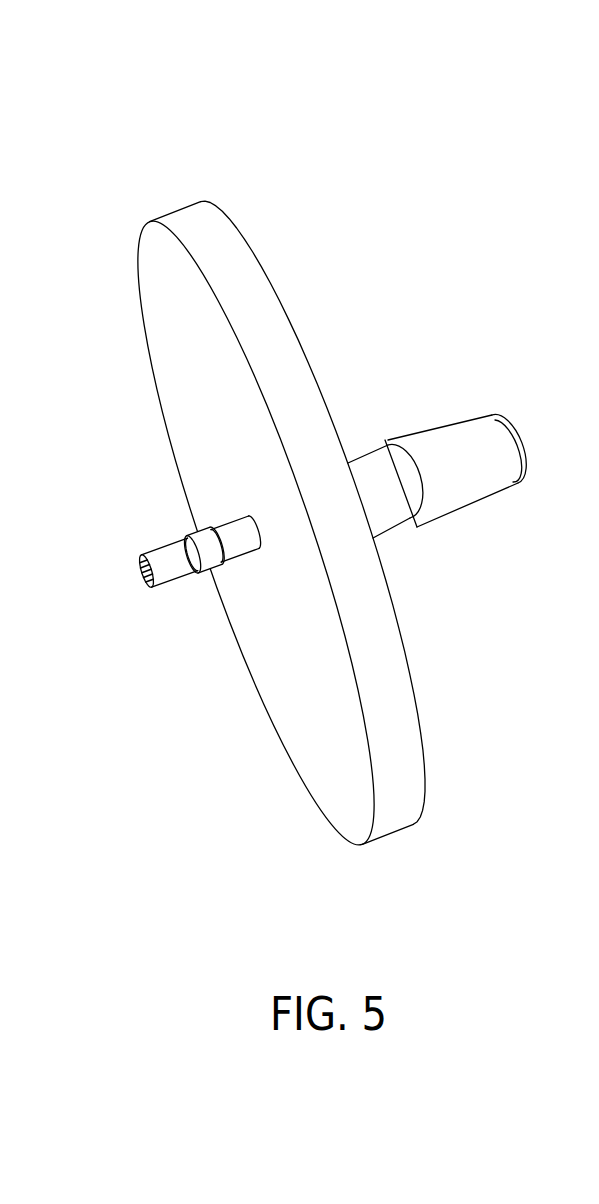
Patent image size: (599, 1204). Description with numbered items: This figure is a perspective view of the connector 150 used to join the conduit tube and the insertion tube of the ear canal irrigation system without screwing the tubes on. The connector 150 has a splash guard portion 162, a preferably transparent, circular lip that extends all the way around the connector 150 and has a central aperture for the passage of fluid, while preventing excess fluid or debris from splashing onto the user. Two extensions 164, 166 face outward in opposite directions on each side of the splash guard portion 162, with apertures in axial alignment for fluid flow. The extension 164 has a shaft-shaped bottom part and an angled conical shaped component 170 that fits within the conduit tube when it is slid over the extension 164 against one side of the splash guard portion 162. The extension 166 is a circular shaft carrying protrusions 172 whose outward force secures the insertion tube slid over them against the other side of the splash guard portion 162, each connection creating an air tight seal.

The connector 150 is at (322, 182).
The splash guard portion 162 is at (177, 207).
The extension 164 is at (408, 383).
The conical shaped component 170 is at (483, 400).
The extension 166 is at (145, 543).
The protrusions 172 is at (185, 530).